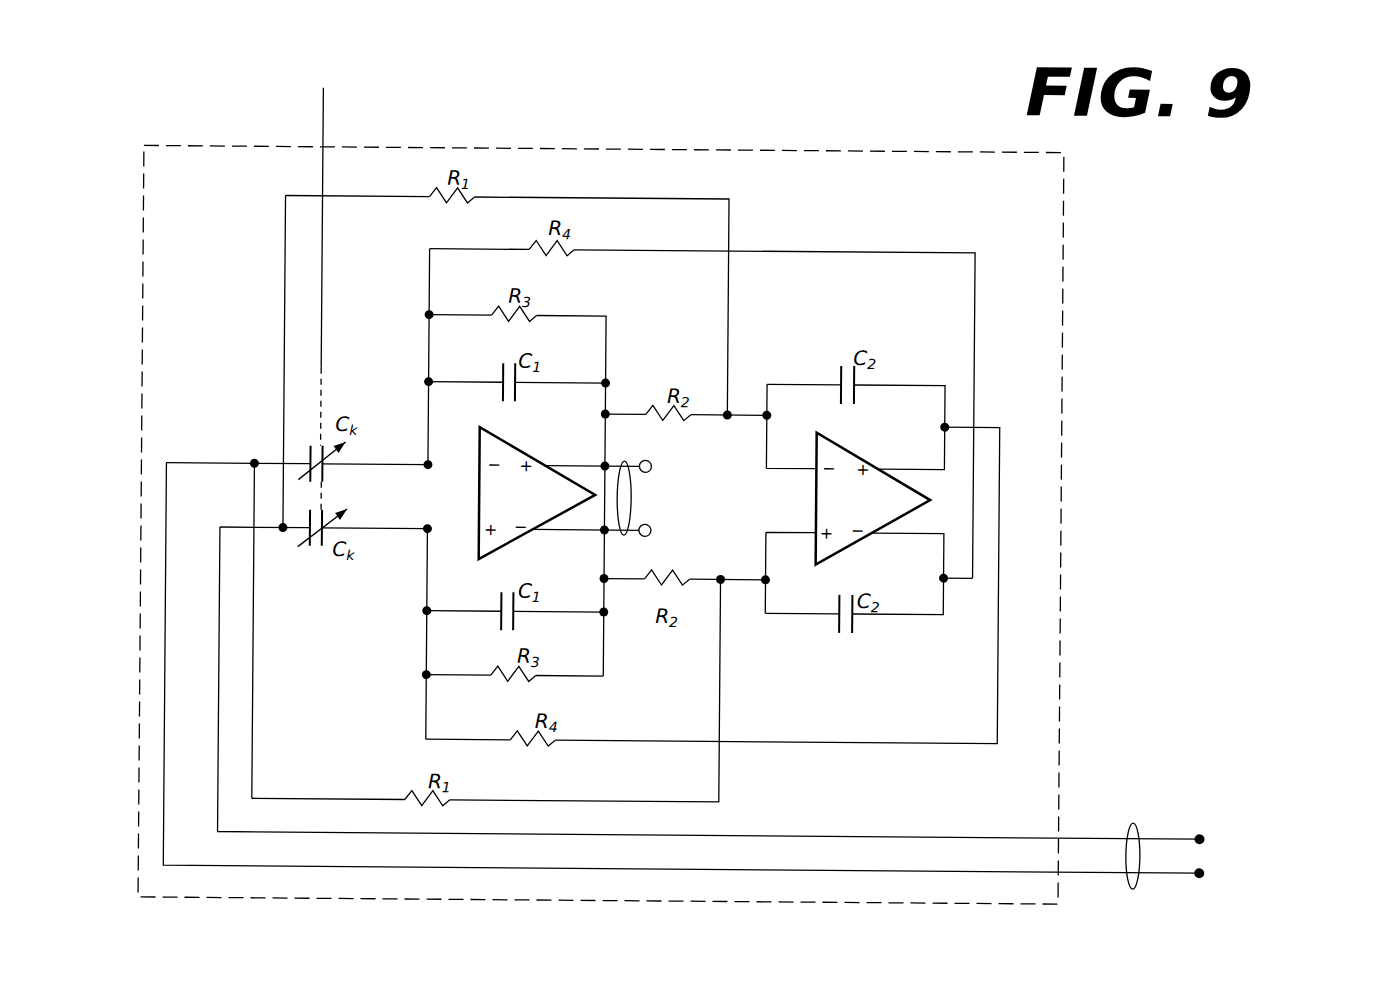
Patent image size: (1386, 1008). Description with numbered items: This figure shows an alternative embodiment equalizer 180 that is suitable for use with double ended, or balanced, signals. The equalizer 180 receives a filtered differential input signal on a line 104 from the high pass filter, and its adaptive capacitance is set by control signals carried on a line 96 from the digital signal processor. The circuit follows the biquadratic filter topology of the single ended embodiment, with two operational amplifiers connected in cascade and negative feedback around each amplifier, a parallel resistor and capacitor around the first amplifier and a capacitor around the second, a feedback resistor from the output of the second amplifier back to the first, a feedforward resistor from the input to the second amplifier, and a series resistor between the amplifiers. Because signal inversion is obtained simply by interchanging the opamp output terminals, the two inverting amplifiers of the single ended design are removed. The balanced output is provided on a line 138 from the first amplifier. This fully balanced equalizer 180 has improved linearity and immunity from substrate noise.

The line 96 is at (320, 117).
The line 104 is at (1136, 819).
The line 138 is at (626, 462).
The equalizer 180 is at (1060, 190).